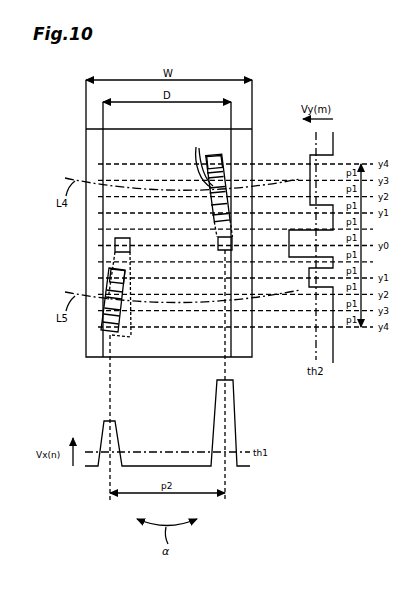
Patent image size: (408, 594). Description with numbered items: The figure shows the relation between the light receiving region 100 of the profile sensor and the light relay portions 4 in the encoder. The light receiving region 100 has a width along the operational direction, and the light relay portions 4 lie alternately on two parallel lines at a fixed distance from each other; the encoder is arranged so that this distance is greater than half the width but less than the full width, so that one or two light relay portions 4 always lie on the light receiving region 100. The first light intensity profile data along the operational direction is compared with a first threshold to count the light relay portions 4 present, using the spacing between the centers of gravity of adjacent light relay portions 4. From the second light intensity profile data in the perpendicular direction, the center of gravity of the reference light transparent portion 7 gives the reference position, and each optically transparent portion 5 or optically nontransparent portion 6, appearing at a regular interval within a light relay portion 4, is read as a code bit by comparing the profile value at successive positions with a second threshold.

The light receiving region 100 is at (86, 158).
The light relay portion 4 is at (217, 154).
The optically transparent portion 5 is at (139, 286).
The optically nontransparent portion 6 is at (213, 224).
The reference light transparent portion 7 is at (218, 243).